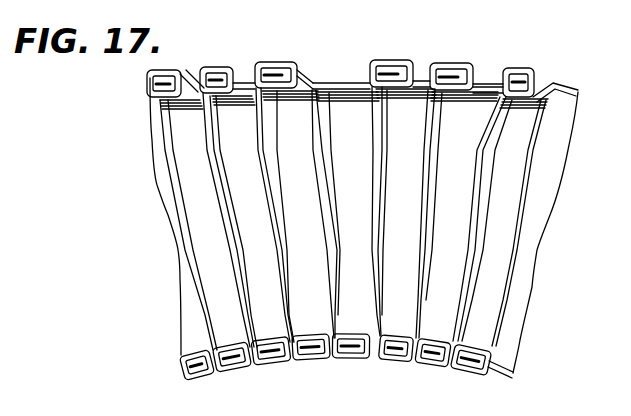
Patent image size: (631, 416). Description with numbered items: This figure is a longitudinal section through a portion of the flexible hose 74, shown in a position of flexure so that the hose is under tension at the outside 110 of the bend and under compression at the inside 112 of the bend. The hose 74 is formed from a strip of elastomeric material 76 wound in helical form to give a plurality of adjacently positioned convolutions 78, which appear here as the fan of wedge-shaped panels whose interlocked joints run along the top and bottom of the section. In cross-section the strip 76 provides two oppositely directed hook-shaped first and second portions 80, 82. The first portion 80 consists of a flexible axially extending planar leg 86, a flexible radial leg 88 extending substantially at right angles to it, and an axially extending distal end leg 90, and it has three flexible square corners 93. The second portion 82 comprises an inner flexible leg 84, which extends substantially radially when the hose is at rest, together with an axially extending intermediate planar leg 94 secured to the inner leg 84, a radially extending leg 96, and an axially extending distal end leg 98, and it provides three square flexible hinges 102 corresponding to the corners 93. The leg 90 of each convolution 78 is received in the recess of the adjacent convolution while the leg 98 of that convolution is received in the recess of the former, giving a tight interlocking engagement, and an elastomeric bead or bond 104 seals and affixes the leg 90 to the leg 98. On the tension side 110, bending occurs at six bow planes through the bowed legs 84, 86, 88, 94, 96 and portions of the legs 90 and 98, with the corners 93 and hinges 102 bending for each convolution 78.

The flexible hose 74 is at (141, 182).
The strip of elastomeric material 76 is at (511, 373).
The convolutions 78 is at (460, 202).
The first hook-shaped portion 80 is at (402, 98).
The second hook-shaped portion 82 is at (397, 55).
The inner flexible leg 84 is at (556, 92).
The axially-extending planar leg 86 is at (178, 104).
The flexible radial leg 88 is at (155, 95).
The axially-extending distal end leg 90 is at (452, 71).
The flexible square corners 93 is at (507, 78).
The axially-extending intermediate planar leg 94 is at (282, 68).
The radially-extending leg 96 is at (305, 74).
The axially-extending distal end leg 98 is at (298, 92).
The square flexible hinges 102 is at (194, 58).
The elastomeric bead or bond 104 is at (522, 73).
The outside of the bend 110 is at (499, 45).
The inside of the bend 112 is at (227, 385).